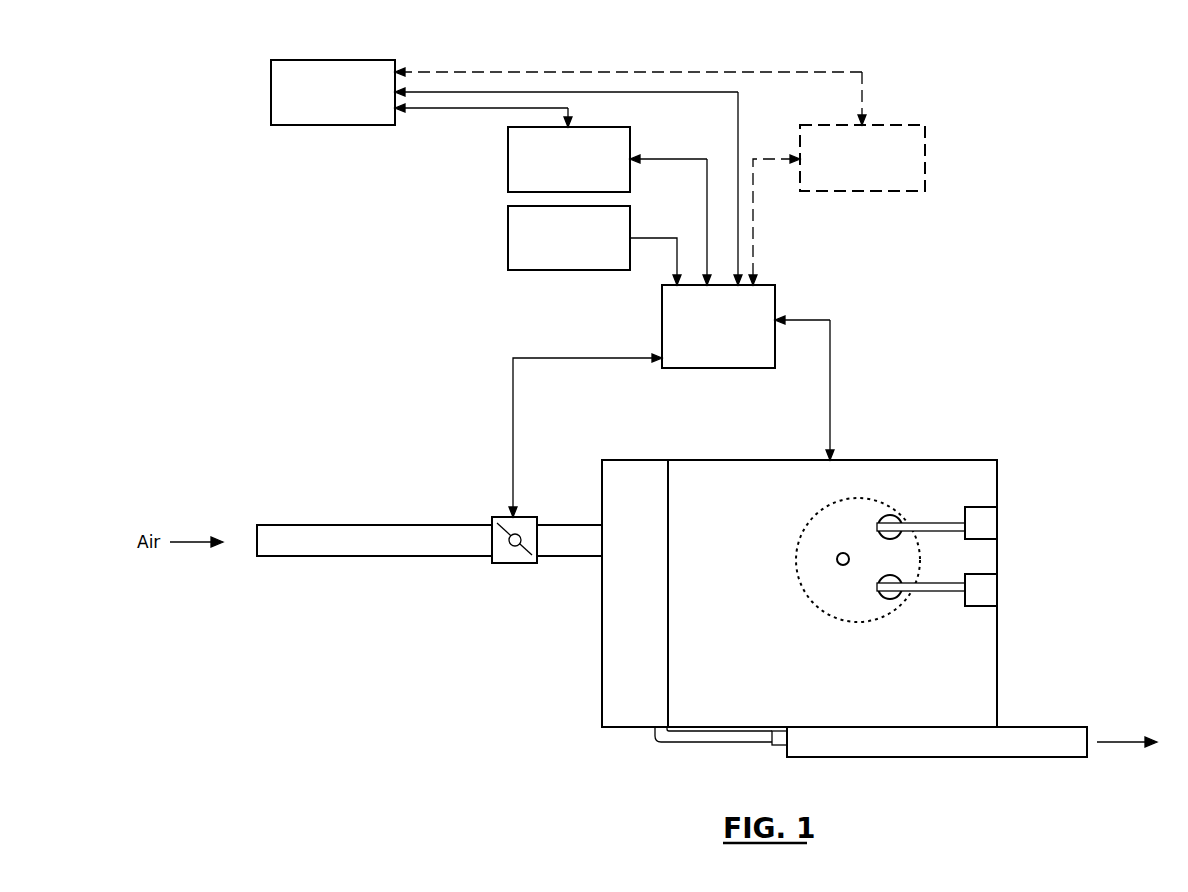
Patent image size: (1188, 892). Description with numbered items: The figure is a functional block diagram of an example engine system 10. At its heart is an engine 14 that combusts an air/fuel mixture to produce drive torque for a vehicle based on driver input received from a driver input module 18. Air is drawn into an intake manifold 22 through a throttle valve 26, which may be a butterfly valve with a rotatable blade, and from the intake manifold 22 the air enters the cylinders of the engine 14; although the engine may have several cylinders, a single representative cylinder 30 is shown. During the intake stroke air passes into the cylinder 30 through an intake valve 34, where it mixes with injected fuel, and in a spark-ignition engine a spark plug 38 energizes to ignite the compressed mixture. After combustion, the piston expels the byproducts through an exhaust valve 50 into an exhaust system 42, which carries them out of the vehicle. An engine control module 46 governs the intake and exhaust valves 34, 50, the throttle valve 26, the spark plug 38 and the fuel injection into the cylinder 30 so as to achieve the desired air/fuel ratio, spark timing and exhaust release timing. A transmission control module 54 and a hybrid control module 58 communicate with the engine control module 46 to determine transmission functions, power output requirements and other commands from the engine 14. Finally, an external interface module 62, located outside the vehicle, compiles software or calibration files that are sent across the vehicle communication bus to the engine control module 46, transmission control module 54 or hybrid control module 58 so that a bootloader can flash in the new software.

The engine system 10 is at (186, 171).
The engine 14 is at (602, 670).
The driver input module 18 is at (508, 224).
The intake manifold 22 is at (637, 593).
The throttle valve 26 is at (512, 565).
The cylinder 30 is at (820, 613).
The intake valve 34 is at (893, 515).
The spark plug 38 is at (837, 560).
The exhaust system 42 is at (1079, 766).
The engine control module 46 is at (779, 300).
The exhaust valve 50 is at (895, 600).
The transmission control module 54 is at (508, 156).
The hybrid control module 58 is at (862, 195).
The external interface module 62 is at (271, 74).